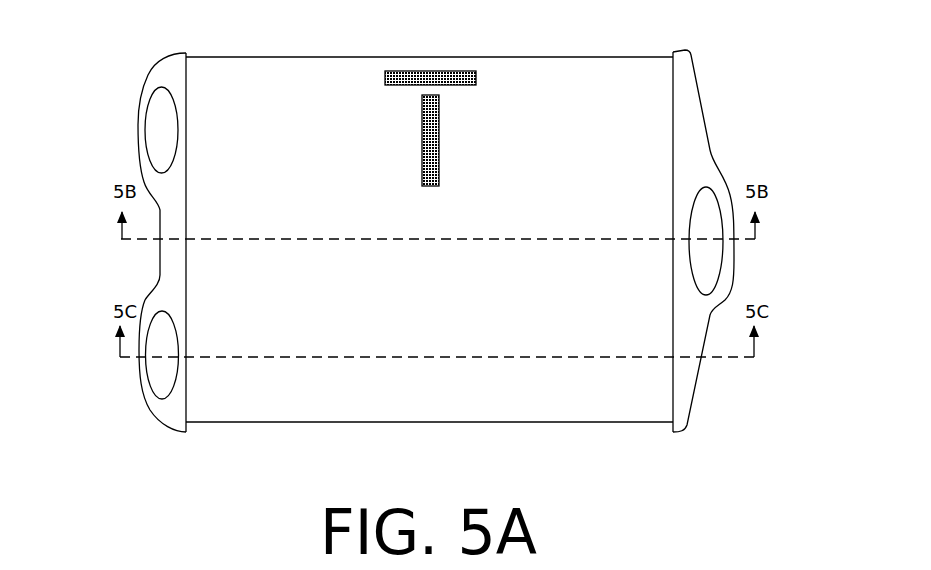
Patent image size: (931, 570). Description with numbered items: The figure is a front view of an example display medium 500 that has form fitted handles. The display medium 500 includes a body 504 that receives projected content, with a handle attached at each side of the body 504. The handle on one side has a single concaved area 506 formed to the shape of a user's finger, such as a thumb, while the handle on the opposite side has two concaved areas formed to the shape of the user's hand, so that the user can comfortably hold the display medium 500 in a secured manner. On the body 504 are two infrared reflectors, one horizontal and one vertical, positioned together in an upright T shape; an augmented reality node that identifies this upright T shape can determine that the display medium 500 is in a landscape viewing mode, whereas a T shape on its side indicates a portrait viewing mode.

The display medium 500 is at (726, 33).
The body 504 is at (320, 78).
The concaved area 506 is at (703, 211).